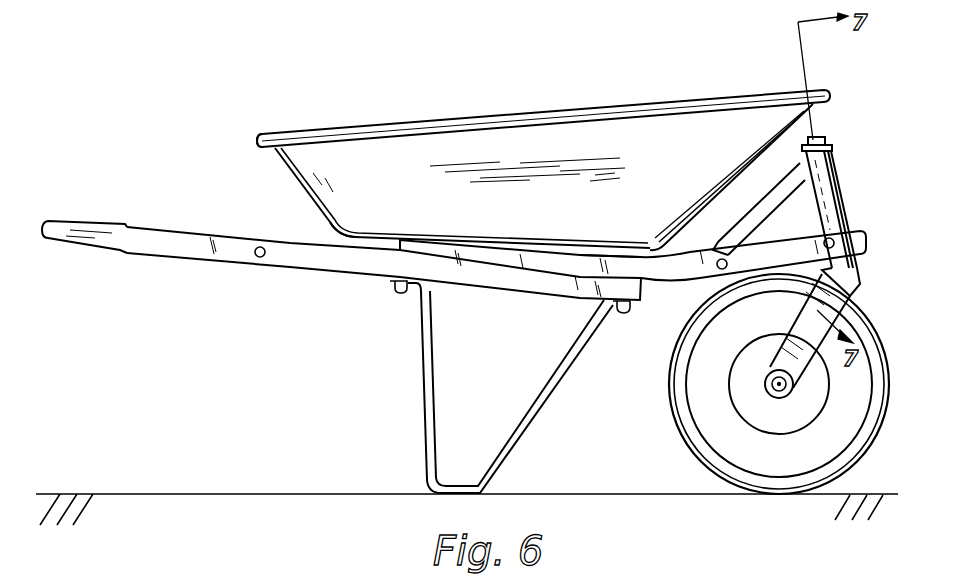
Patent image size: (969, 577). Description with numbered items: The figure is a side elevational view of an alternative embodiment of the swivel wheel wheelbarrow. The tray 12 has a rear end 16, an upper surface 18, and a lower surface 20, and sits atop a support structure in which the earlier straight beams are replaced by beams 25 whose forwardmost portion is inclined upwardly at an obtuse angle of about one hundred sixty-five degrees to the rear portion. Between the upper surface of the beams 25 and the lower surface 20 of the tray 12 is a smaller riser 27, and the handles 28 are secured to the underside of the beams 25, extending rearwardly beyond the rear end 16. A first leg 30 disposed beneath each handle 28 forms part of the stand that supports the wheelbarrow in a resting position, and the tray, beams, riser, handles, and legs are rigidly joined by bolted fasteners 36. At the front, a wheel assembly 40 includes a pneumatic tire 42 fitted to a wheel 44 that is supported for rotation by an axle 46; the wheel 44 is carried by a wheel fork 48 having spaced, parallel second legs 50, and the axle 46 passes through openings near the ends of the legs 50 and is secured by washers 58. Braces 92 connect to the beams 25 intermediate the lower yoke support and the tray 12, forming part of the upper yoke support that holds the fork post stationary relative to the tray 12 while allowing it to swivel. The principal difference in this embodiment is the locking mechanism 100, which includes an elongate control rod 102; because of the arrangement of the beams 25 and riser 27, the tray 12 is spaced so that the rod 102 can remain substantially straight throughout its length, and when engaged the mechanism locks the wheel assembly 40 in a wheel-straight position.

The tray 12 is at (518, 141).
The rear end 16 is at (273, 153).
The upper surface 18 is at (480, 112).
The lower surface 20 is at (341, 280).
The beams 25 is at (528, 256).
The riser 27 is at (604, 254).
The handle 28 is at (197, 247).
The first leg 30 is at (522, 431).
The bolted fasteners 36 is at (400, 296).
The wheel assembly 40 is at (823, 302).
The pneumatic tire 42 is at (852, 453).
The wheel 44 is at (782, 415).
The axle 46 is at (764, 388).
The wheel fork 48 is at (862, 267).
The second legs 50 is at (803, 328).
The washers 58 is at (788, 395).
The braces 92 is at (737, 233).
The locking mechanism 100 is at (848, 218).
The control rod 102 is at (320, 238).